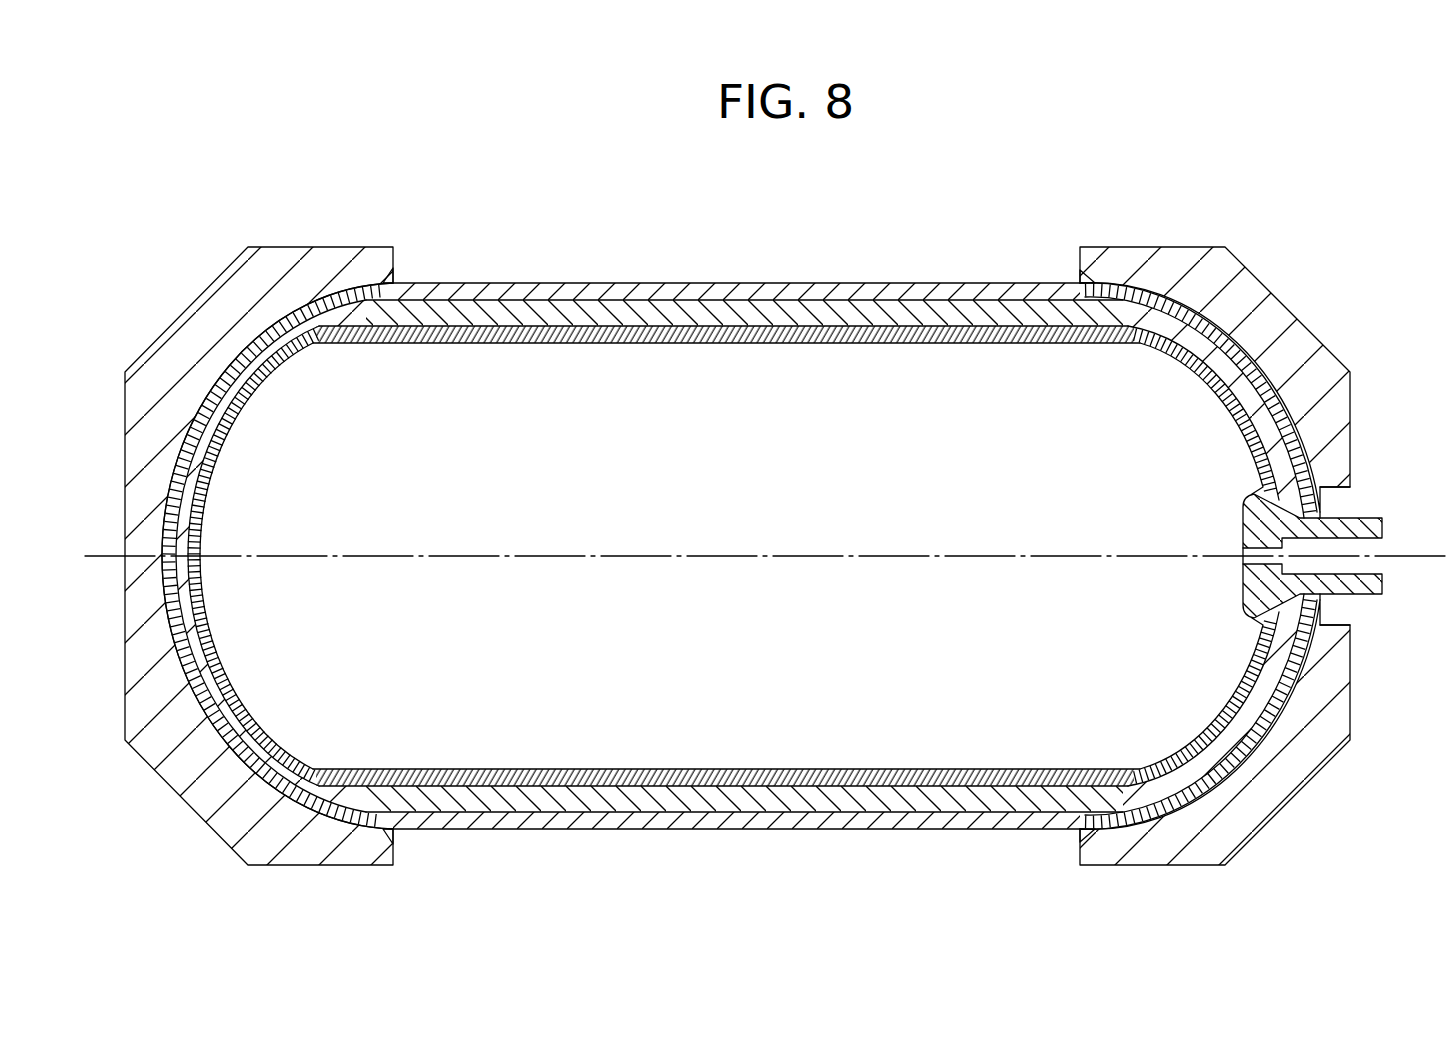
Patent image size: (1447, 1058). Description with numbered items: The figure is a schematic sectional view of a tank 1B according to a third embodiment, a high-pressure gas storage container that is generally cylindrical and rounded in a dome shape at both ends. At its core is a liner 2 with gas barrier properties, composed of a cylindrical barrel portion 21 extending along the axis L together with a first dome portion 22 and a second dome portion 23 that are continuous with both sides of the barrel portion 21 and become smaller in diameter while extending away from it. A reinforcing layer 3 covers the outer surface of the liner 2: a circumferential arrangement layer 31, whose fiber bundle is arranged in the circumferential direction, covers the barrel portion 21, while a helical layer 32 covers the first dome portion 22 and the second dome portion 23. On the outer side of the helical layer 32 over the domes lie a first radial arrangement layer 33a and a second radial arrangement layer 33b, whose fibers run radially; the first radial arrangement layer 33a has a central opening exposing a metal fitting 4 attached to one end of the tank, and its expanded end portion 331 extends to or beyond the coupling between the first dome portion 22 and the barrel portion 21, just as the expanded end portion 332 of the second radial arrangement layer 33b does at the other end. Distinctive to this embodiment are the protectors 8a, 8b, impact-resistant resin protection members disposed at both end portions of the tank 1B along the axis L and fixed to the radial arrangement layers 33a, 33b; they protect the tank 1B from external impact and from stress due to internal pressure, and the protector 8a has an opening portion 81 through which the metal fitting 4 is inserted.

The tank 1B is at (983, 207).
The liner 2 is at (673, 342).
The barrel portion 21 is at (777, 343).
The first dome portion 22 is at (1220, 393).
The second dome portion 23 is at (258, 393).
The reinforcing layer 3 is at (727, 277).
The circumferential arrangement layer 31 is at (894, 300).
The helical layer 32 is at (596, 283).
The expanded end portion 331 is at (1082, 283).
The expanded end portion 332 is at (390, 282).
The first radial arrangement layer 33a is at (1288, 378).
The second radial arrangement layer 33b is at (222, 362).
The metal fitting 4 is at (1366, 518).
The protector 8a is at (1165, 245).
The protector 8b is at (338, 245).
The opening portion 81 is at (1340, 624).
The axis L is at (1440, 556).